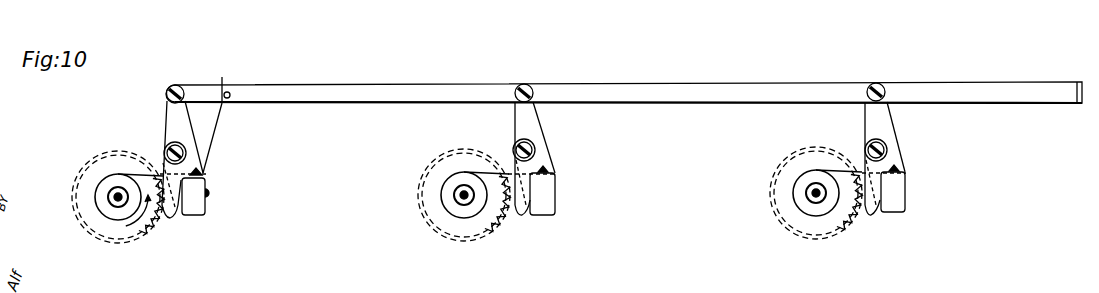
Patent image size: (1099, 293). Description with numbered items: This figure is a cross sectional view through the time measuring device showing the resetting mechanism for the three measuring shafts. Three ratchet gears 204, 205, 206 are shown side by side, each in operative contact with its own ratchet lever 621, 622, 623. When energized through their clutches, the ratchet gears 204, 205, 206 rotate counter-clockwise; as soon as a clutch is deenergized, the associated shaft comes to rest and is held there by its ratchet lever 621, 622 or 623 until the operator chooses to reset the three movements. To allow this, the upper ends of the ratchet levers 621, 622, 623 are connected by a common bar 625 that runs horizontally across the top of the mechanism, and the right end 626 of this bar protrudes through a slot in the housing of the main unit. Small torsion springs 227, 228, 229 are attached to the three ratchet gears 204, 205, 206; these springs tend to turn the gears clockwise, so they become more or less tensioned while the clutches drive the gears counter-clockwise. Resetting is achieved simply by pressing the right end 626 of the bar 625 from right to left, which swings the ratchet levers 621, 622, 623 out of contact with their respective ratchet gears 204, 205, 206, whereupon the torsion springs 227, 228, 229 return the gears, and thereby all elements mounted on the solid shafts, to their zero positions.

The common bar 625 is at (637, 84).
The right end of bar 626 is at (1077, 88).
The ratchet gear 204 is at (143, 236).
The ratchet gear 205 is at (490, 235).
The ratchet gear 206 is at (847, 232).
The torsion spring 227 is at (132, 173).
The torsion spring 228 is at (482, 173).
The torsion spring 229 is at (837, 172).
The ratchet lever 621 is at (172, 218).
The ratchet lever 622 is at (517, 211).
The ratchet lever 623 is at (870, 213).